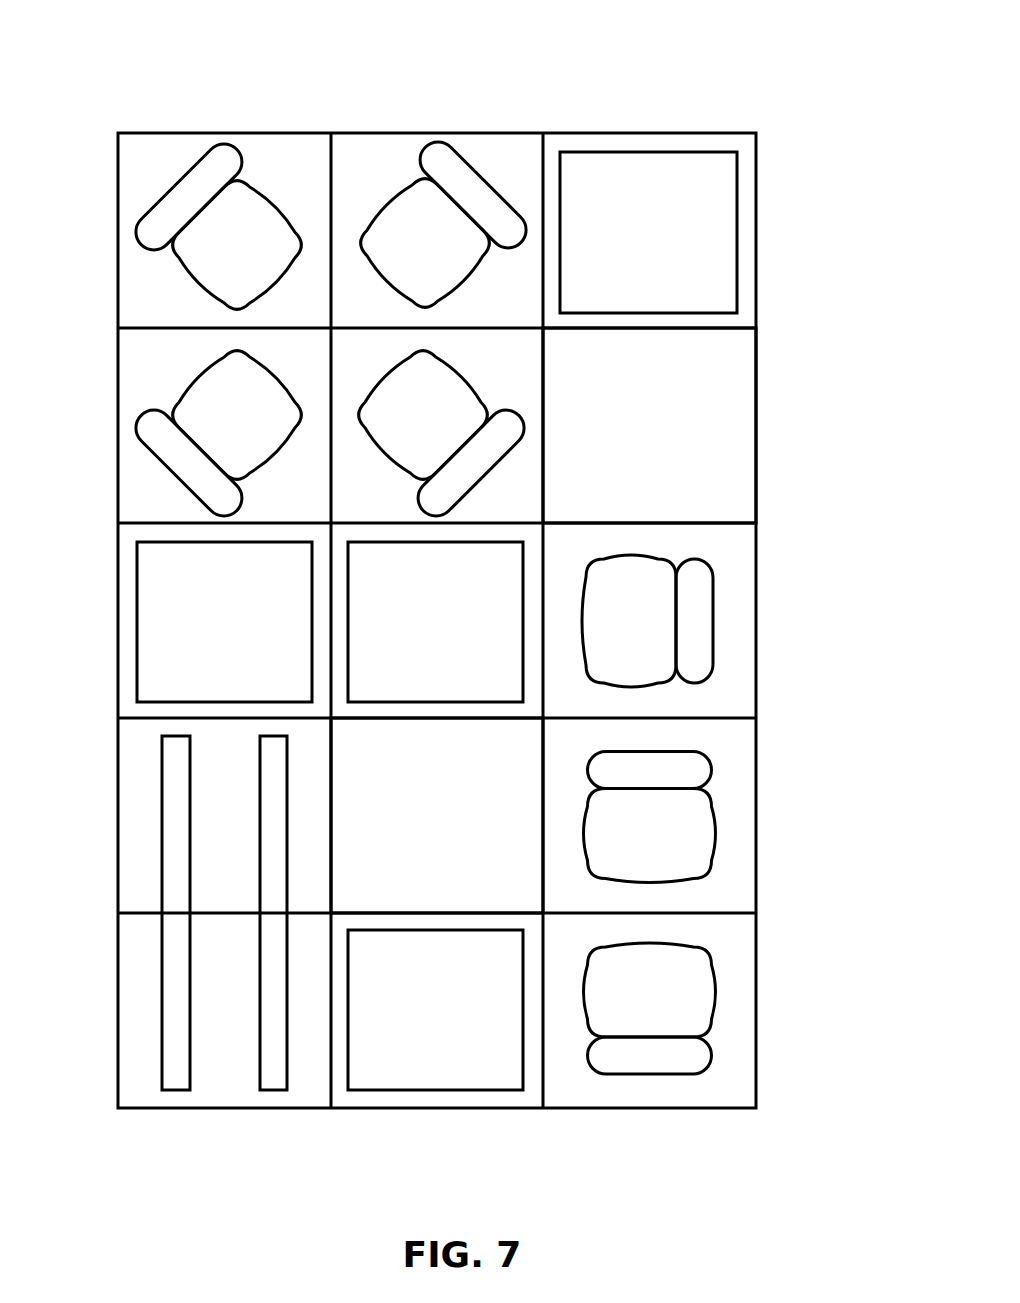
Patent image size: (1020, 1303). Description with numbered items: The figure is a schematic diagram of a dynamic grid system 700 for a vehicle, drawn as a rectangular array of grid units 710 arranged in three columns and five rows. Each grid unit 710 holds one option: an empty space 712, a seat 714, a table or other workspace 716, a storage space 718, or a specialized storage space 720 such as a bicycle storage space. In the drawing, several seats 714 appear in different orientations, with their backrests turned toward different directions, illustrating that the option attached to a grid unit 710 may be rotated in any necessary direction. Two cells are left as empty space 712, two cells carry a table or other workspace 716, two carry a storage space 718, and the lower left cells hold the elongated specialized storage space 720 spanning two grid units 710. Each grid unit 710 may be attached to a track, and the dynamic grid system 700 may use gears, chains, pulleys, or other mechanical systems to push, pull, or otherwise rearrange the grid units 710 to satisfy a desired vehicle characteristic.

The dynamic grid system 700 is at (278, 90).
The grid unit 710 is at (687, 313).
The empty space 712 is at (627, 438).
The seat 714 is at (212, 254).
The table or other workspace 716 is at (415, 1033).
The storage space 718 is at (204, 644).
The specialized storage space 720 is at (260, 1023).